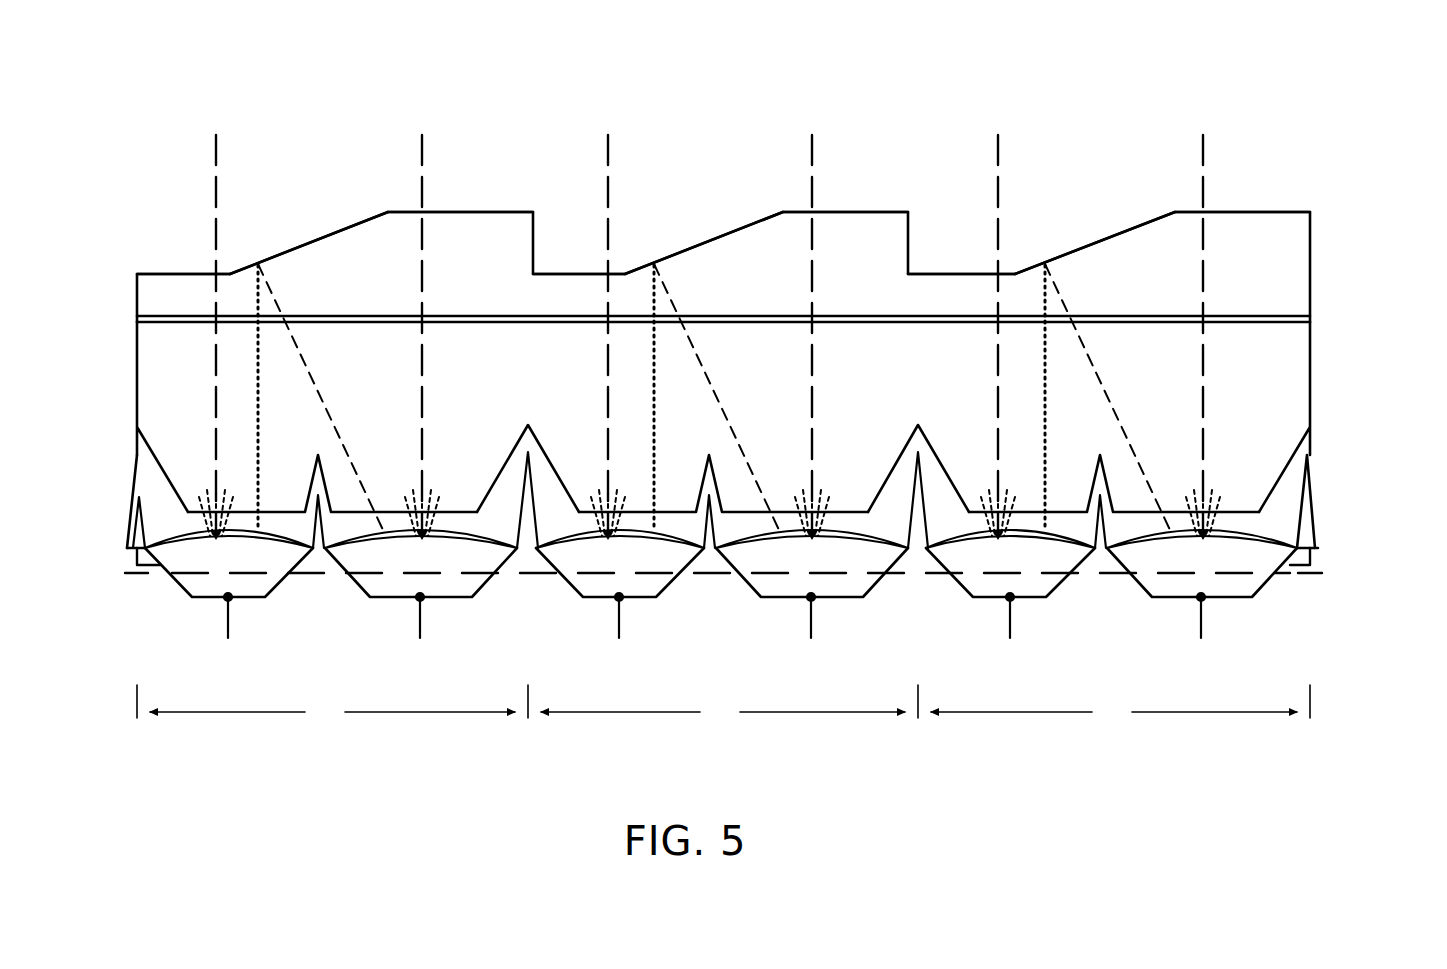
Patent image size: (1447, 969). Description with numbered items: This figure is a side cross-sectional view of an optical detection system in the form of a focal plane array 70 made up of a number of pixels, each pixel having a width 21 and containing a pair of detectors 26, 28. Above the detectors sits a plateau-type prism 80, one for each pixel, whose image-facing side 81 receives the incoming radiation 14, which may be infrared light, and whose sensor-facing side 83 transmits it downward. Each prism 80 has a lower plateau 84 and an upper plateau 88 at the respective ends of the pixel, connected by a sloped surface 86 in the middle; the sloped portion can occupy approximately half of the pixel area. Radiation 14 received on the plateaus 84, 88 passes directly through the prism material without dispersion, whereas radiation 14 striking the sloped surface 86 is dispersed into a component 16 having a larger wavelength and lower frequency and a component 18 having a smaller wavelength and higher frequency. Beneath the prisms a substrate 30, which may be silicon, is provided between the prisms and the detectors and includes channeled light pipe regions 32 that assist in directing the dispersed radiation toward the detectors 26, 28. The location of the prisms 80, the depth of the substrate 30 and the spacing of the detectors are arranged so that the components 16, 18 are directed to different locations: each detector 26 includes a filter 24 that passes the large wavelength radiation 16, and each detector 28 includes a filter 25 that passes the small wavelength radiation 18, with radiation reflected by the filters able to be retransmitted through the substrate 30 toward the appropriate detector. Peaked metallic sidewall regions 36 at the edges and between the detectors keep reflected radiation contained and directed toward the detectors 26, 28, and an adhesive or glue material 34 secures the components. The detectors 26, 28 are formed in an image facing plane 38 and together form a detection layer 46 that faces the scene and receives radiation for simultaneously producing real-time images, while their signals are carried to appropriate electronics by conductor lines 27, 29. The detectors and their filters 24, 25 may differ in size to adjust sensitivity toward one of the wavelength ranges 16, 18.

The radiation 14 is at (224, 152).
The radiation component 16 is at (246, 402).
The radiation component 18 is at (303, 358).
The pixel width 21 is at (723, 706).
The filter 24 is at (217, 548).
The filter 25 is at (407, 546).
The detector 26 is at (273, 596).
The conductor line 27 is at (226, 628).
The detector 28 is at (476, 596).
The conductor line 29 is at (418, 628).
The substrate 30 is at (1305, 330).
The light pipe region 32 is at (148, 440).
The adhesive or glue material 34 is at (146, 530).
The sidewall region 36 is at (134, 512).
The image facing plane 38 is at (132, 573).
The detection layer 46 is at (218, 546).
The focal plane array 70 is at (1352, 158).
The plateau-type prism 80 is at (516, 194).
The image-facing side 81 is at (142, 255).
The sensor-facing side 83 is at (190, 326).
The lower plateau 84 is at (170, 273).
The sloped surface 86 is at (327, 236).
The upper plateau 88 is at (495, 211).